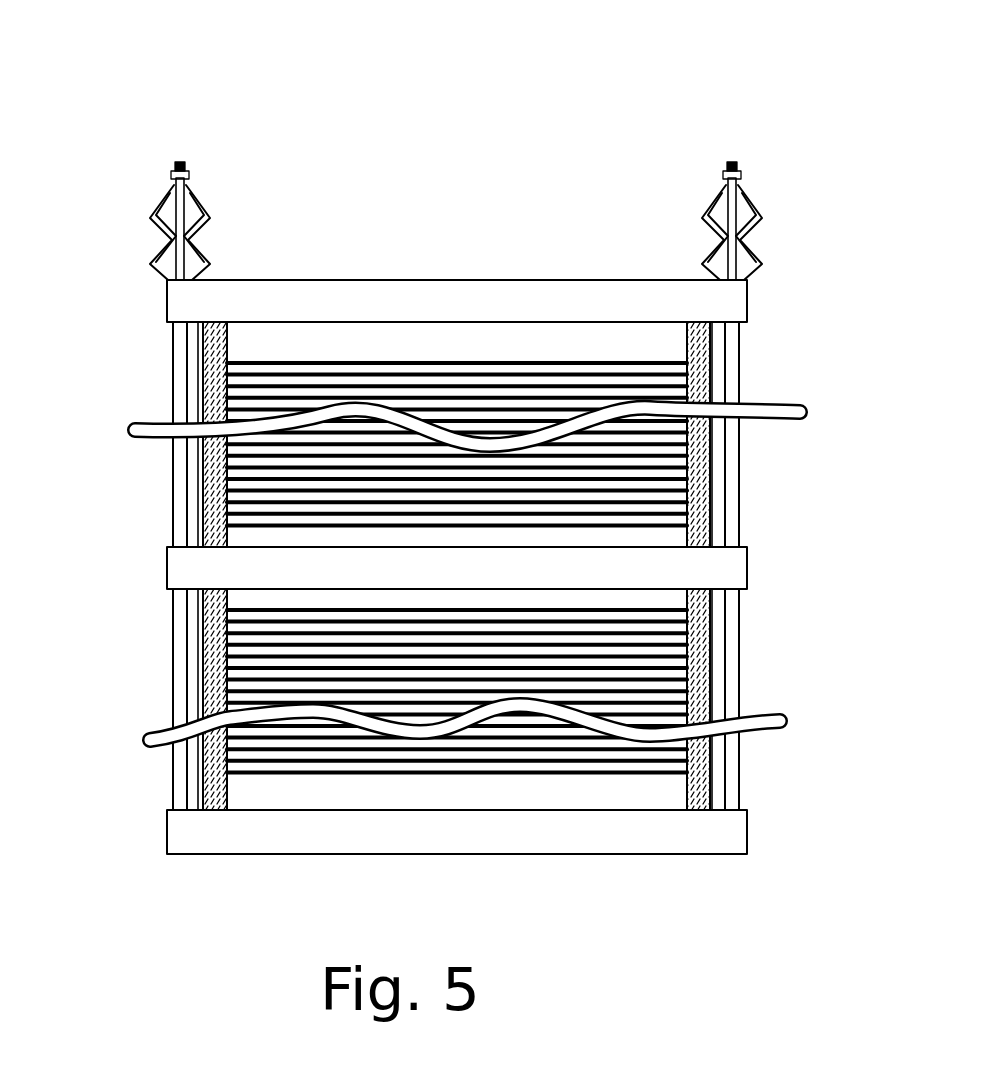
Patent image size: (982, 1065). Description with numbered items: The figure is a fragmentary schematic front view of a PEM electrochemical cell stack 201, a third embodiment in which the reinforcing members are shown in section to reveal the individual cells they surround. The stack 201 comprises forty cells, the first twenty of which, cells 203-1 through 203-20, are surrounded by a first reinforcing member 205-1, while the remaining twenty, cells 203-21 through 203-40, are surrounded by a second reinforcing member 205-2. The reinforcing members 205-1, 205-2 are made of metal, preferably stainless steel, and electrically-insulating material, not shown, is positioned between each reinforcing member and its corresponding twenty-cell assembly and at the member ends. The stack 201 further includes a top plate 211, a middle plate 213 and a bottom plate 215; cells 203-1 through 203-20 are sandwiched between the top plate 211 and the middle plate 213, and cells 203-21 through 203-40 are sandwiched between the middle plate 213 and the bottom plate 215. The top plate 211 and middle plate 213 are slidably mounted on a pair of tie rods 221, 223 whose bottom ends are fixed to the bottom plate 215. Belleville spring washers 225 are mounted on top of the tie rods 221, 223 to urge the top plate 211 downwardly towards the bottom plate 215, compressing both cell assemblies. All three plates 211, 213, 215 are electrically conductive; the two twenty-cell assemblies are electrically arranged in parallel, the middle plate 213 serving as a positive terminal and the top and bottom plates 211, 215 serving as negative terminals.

The PEM electrochemical cell stack 201 is at (428, 140).
The cell 203-1 is at (677, 372).
The cell 203-20 is at (683, 518).
The cell 203-21 is at (676, 612).
The cell 203-40 is at (676, 764).
The first reinforcing member 205-1 is at (203, 506).
The second reinforcing member 205-2 is at (203, 638).
The top plate 211 is at (274, 307).
The middle plate 213 is at (724, 566).
The bottom plate 215 is at (185, 837).
The tie rod 221 is at (178, 465).
The tie rod 223 is at (727, 464).
The Belleville spring washers 225 is at (150, 258).